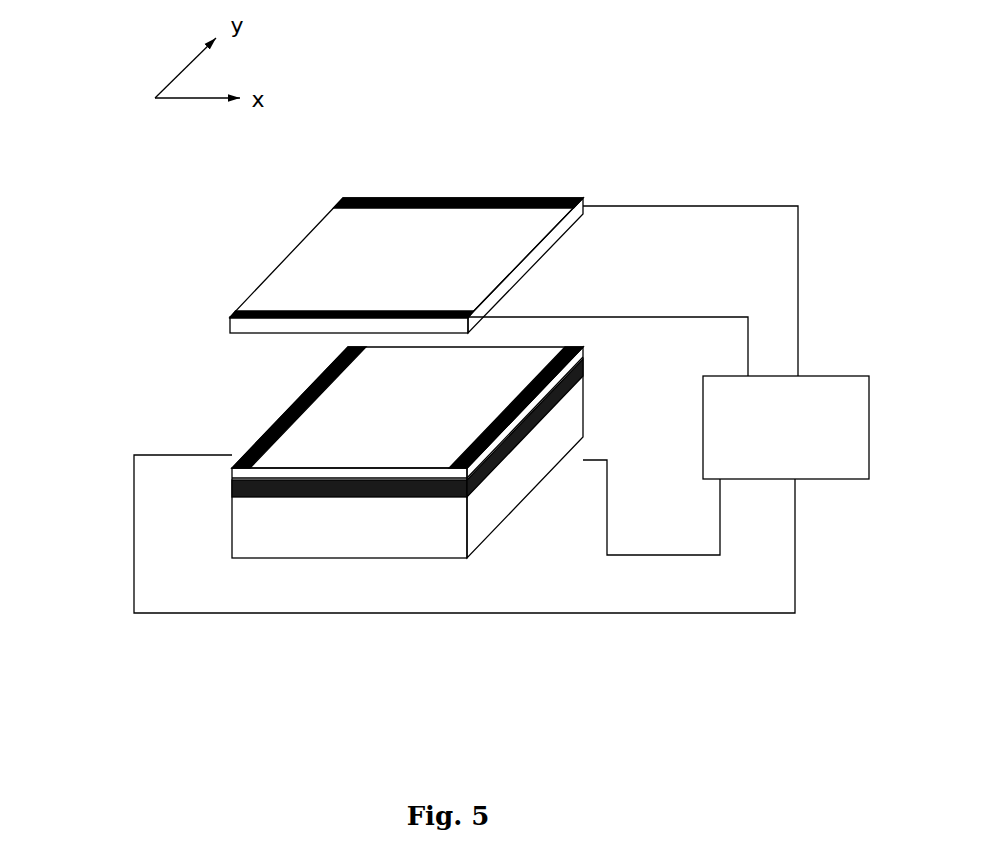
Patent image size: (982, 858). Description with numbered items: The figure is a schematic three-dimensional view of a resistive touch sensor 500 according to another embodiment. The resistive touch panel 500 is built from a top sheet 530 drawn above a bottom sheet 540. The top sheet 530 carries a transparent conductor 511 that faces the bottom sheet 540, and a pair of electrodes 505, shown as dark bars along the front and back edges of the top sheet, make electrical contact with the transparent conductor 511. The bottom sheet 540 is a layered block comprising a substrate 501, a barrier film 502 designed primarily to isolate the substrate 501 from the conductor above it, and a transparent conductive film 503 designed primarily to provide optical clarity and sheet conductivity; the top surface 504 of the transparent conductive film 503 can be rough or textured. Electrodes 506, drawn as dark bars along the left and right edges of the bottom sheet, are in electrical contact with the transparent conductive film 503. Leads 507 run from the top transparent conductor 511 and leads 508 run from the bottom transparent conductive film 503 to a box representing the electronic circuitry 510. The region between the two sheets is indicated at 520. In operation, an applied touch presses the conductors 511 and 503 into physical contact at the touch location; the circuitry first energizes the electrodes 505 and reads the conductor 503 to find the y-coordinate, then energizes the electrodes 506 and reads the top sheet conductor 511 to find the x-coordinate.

The resistive touch sensor 500 is at (573, 88).
The substrate 501 is at (230, 547).
The barrier film 502 is at (230, 492).
The transparent conductive film 503 is at (230, 477).
The surface 504 is at (363, 445).
The electrodes 505 is at (392, 310).
The electrodes 506 is at (345, 372).
The leads 507 is at (658, 317).
The leads 508 is at (630, 557).
The electronic circuitry 510 is at (786, 427).
The transparent conductor 511 is at (497, 265).
The gap between upper plate and lower element 520 is at (155, 275).
The top sheet 530 is at (260, 245).
The bottom sheet 540 is at (243, 417).